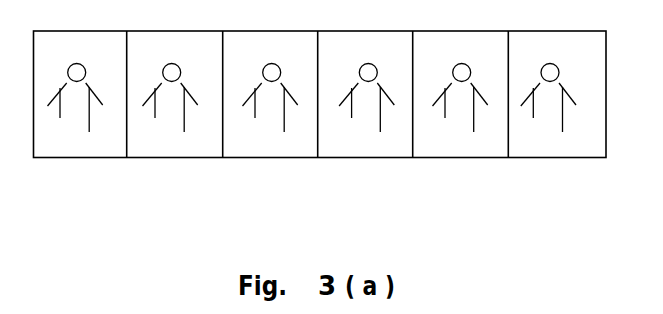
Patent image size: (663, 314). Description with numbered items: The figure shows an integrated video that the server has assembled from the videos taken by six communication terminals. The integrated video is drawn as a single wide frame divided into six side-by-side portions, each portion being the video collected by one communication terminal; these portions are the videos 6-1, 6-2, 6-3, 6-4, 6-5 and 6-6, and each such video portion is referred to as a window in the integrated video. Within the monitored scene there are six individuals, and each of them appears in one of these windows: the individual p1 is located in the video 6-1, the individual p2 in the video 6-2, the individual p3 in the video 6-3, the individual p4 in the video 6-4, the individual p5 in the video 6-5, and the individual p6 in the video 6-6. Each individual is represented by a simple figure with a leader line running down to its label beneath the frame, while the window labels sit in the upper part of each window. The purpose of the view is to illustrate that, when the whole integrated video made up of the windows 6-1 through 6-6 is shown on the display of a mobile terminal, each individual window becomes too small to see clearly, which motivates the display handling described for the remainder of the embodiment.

The video 6-1 is at (80, 127).
The video 6-2 is at (171, 127).
The video 6-3 is at (270, 132).
The video 6-4 is at (365, 132).
The video 6-5 is at (461, 128).
The video 6-6 is at (553, 128).
The individual p1 is at (89, 132).
The individual p2 is at (184, 132).
The individual p3 is at (284, 132).
The individual p4 is at (380, 132).
The individual p5 is at (474, 132).
The individual p6 is at (562, 132).